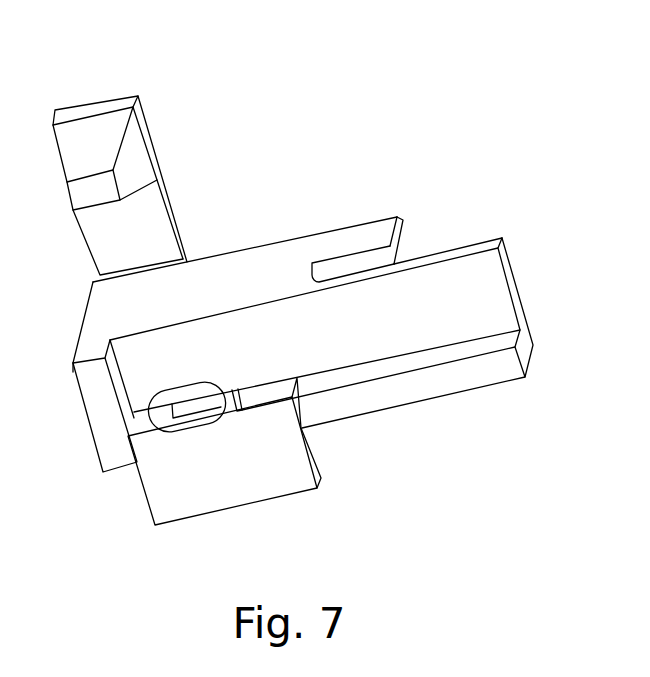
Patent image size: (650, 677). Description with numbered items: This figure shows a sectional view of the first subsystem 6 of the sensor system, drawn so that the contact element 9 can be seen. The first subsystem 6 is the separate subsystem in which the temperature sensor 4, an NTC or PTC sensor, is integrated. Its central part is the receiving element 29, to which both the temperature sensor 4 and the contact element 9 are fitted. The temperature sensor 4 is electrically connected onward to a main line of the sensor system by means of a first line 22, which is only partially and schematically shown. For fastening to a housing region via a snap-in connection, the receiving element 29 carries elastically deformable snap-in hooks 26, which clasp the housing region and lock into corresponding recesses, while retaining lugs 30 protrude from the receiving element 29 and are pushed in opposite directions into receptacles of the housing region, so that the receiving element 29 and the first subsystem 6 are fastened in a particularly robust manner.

The first subsystem 6 is at (313, 172).
The snap-in hook 26 is at (88, 134).
The receiving element 29 is at (236, 277).
The retaining lug 30 is at (348, 245).
The first line 22 is at (327, 363).
The temperature sensor 4 is at (148, 436).
The contact element 9 is at (247, 475).